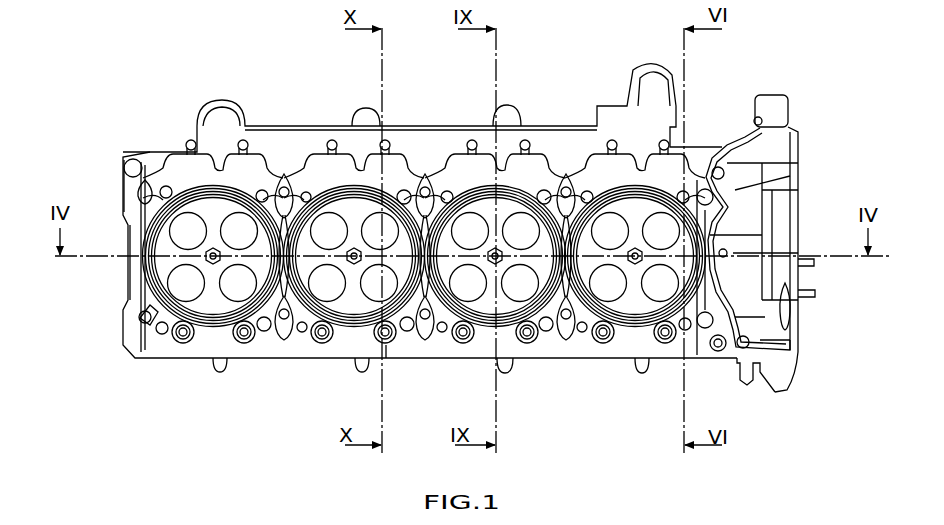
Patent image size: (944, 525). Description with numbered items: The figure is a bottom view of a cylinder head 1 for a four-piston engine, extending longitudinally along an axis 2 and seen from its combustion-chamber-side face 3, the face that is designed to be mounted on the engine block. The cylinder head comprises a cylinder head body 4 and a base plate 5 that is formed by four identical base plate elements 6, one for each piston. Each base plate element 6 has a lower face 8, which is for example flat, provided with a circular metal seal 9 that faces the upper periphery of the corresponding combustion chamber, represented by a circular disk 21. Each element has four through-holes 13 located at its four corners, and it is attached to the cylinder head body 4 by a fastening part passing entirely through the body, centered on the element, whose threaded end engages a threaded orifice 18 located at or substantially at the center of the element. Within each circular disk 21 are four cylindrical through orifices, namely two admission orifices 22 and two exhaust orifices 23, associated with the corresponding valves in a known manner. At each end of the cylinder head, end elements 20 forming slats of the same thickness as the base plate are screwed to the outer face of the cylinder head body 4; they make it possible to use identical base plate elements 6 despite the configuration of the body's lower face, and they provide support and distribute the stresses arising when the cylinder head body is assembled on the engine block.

The cylinder head 1 is at (742, 84).
The axis 2 is at (828, 258).
The combustion-chamber-side face 3 is at (185, 358).
The cylinder head body 4 is at (431, 135).
The base plate 5 is at (118, 190).
The base plate element 6 is at (264, 340).
The lower face 8 is at (240, 190).
The circular metal seal 9 is at (140, 248).
The through-hole 13 is at (188, 227).
The threaded orifice 18 is at (180, 343).
The end element 20 is at (132, 208).
The circular disk 21 is at (217, 303).
The admission orifice 22 is at (134, 322).
The exhaust orifice 23 is at (185, 192).